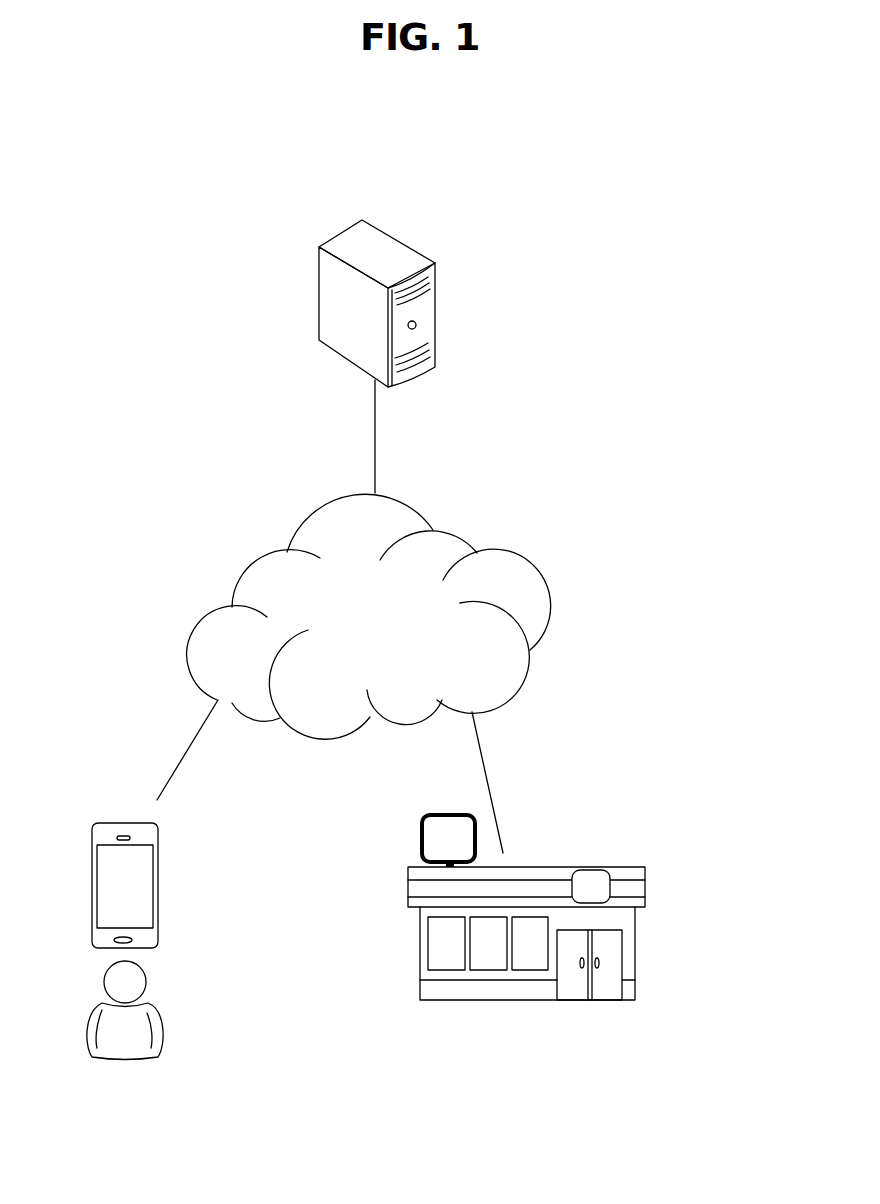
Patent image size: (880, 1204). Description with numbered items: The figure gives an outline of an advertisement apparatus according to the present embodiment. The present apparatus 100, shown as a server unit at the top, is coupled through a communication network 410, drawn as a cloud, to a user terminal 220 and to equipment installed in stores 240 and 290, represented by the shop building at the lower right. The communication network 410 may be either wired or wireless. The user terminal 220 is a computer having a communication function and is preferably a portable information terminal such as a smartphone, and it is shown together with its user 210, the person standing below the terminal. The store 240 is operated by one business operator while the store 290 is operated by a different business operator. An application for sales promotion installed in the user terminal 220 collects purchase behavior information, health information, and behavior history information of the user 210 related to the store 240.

The advertisement apparatus 100 is at (408, 247).
The communication network 410 is at (532, 560).
The user terminal 220 is at (160, 892).
The user 210 is at (155, 1002).
The store 240 is at (580, 904).
The store 290 is at (615, 867).